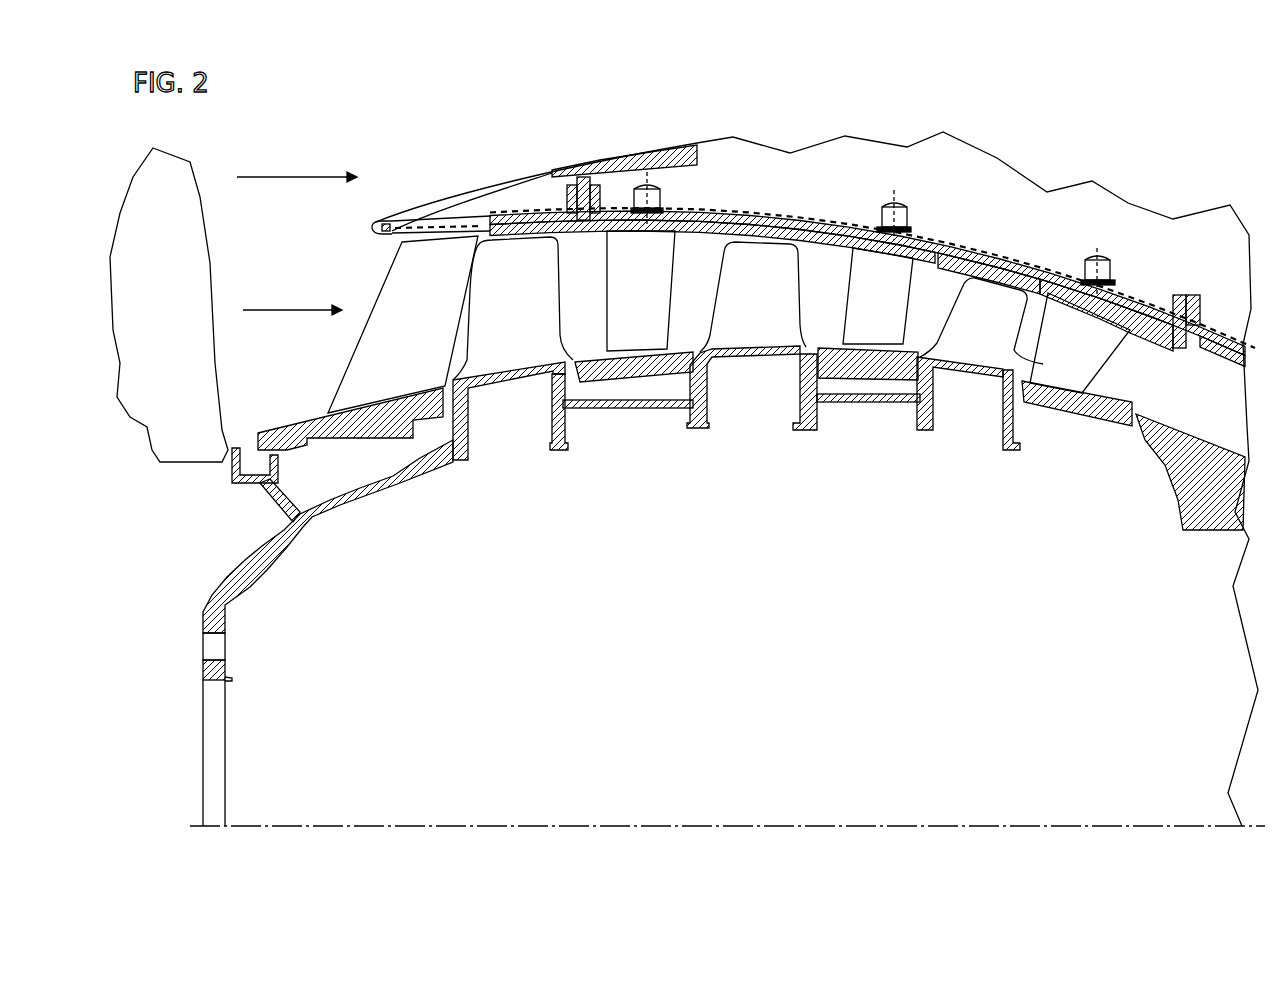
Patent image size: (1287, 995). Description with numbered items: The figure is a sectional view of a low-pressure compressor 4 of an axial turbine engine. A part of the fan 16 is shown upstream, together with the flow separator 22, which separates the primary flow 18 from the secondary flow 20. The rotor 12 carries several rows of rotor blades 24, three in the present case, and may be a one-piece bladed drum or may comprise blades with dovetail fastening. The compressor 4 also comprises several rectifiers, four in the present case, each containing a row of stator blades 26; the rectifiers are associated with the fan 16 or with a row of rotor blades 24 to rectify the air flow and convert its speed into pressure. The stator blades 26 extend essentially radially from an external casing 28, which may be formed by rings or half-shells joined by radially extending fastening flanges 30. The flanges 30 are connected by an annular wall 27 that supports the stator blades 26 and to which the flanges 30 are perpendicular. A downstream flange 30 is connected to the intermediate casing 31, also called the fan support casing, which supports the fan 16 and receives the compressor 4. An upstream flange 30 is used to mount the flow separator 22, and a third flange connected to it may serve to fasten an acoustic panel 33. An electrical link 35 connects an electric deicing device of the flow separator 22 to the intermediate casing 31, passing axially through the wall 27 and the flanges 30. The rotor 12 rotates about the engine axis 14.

The low-pressure compressor 4 is at (682, 592).
The rotor 12 is at (225, 632).
The axis of rotation 14 is at (843, 826).
The fan 16 is at (192, 322).
The primary flow 18 is at (292, 293).
The secondary flow 20 is at (297, 161).
The flow separator 22 is at (372, 230).
The rotor blades 24 is at (531, 312).
The stator blades 26 is at (414, 334).
The annular wall 27 is at (840, 220).
The external casing 28 is at (984, 195).
The fastening flanges 30 is at (270, 432).
The intermediate casing 31 is at (1178, 490).
The acoustic panel 33 is at (583, 172).
The electrical link 35 is at (795, 208).